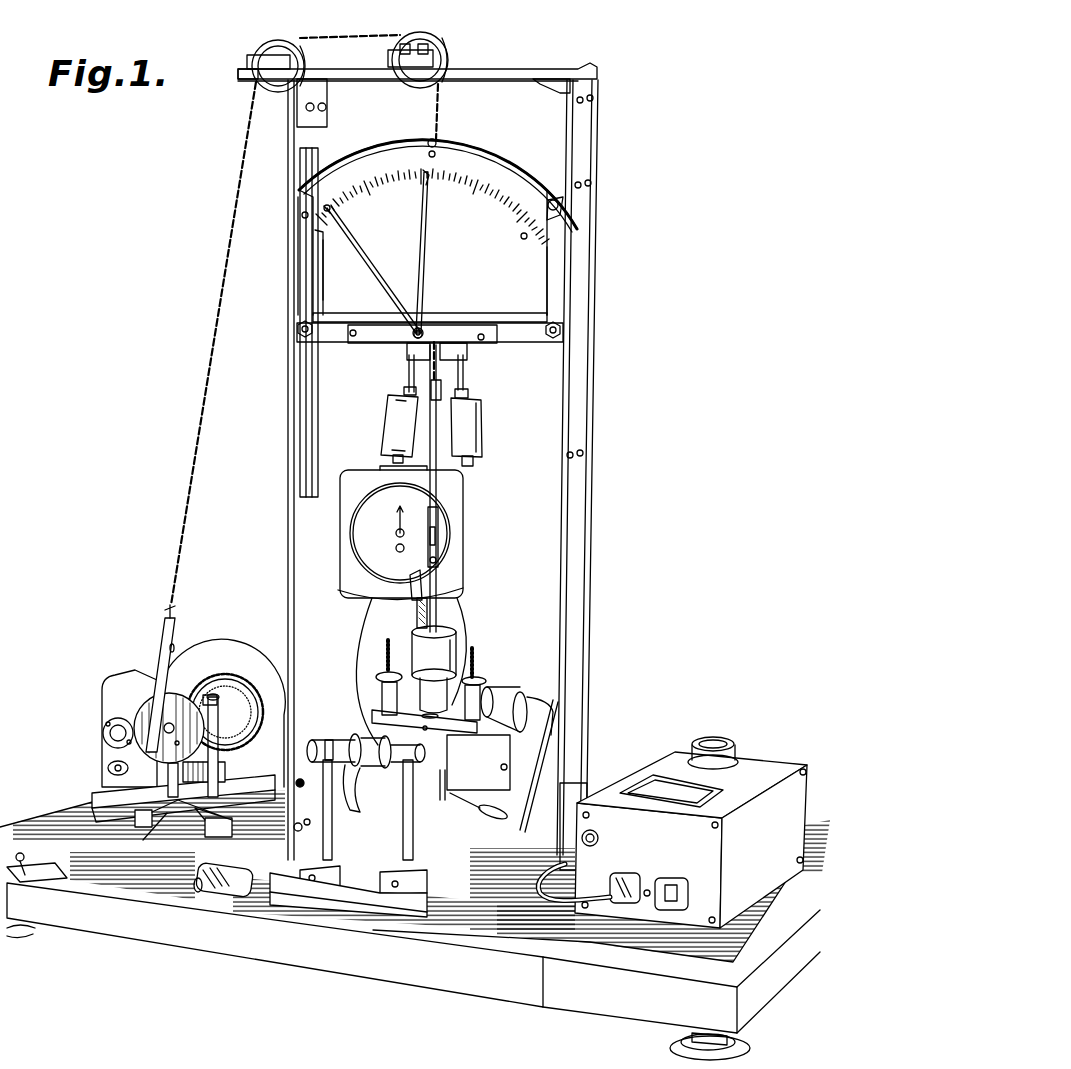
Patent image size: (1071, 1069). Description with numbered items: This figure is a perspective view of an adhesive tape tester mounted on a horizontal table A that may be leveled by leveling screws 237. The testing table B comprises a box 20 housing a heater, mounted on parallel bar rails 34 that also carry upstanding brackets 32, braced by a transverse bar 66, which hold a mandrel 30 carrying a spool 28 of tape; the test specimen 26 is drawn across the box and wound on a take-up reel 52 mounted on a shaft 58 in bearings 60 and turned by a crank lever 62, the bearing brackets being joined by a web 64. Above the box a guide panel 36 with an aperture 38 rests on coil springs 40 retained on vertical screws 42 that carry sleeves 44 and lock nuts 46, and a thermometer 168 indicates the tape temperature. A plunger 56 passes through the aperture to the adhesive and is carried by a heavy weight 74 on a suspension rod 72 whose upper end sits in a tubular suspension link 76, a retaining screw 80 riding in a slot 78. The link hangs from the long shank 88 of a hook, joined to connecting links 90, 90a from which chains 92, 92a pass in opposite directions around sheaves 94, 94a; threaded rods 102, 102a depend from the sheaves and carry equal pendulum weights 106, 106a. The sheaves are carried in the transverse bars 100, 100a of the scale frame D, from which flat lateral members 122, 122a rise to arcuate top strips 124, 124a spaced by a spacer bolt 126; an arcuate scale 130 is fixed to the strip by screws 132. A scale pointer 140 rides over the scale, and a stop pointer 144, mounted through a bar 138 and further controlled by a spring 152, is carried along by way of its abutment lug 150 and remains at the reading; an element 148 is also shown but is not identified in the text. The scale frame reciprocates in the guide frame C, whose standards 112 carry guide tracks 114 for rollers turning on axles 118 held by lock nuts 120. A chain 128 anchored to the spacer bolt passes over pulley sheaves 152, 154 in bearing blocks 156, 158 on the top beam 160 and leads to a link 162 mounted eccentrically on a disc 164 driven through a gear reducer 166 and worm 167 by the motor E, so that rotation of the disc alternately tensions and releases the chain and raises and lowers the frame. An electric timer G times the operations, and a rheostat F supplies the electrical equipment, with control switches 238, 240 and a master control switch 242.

The box 20 is at (492, 900).
The table A is at (165, 940).
The leveling screws 237 is at (672, 1045).
The vertical side beams or standards 112 is at (298, 508).
The guide tracks 114 is at (300, 465).
The guide frame C is at (592, 546).
The top transverse horizontal beam 160 is at (560, 58).
The pulley sheave 154 is at (255, 46).
The bearing block 158 is at (240, 72).
The pulley sheave 152 is at (440, 42).
The bearing block 156 is at (440, 62).
The flexible suspension chain or cable 128 is at (350, 33).
The arcuate scale 130 is at (402, 165).
The arcuate top frame strip 124 is at (490, 153).
The arcuate top frame strip 124a is at (555, 163).
The spacer bolt 126 is at (438, 143).
The screws 132 is at (320, 214).
The stop pointer 144 is at (428, 238).
The abutment lug 150 is at (432, 195).
The scale pointer 140 is at (375, 265).
The cross bar 148 is at (395, 318).
The scale frame D is at (536, 266).
The vertical lateral member 122a is at (310, 252).
The vertical lateral member 122 is at (300, 286).
The bar 138 is at (440, 325).
The front transverse frame bar 100 is at (553, 310).
The rear transverse frame bar 100a is at (550, 300).
The axles 118 is at (575, 328).
The lock nuts 120 is at (560, 335).
The sheave 94 is at (498, 348).
The sheave 94a is at (410, 350).
The chain or cable 92a is at (408, 374).
The chain or cable 92 is at (465, 375).
The connecting link 90a is at (402, 392).
The connecting link 90 is at (470, 394).
The threaded rod 102a is at (385, 412).
The threaded rod 102 is at (484, 412).
The pendulum weight 106a is at (383, 438).
The pendulum weight 106 is at (476, 452).
The long shank 88 is at (440, 438).
The electric timer G is at (473, 509).
The slot 78 is at (440, 516).
The tubular connecting suspension link 76 is at (440, 536).
The retaining screw 80 is at (440, 558).
The suspension rod or stem 72 is at (425, 580).
The thermometer 168 is at (410, 610).
The plunger 56 is at (450, 640).
The heavy weight 74 is at (445, 608).
The lock nuts 46 is at (384, 668).
The parallel vertical screws 42 is at (378, 650).
The guide panel 36 is at (472, 660).
The sleeves 44 is at (380, 700).
The coil springs 40 is at (385, 716).
The upstanding brackets 32 is at (540, 790).
The testing table B is at (568, 778).
The transversely extending bar 66 is at (560, 745).
The test specimen 26 is at (515, 692).
The spool or roll 28 is at (530, 690).
The supporting mandrel 30 is at (528, 712).
The shaft 58 is at (345, 742).
The spool or reel 52 is at (360, 738).
The bearings 60 is at (310, 750).
The aperture 38 is at (366, 788).
The manual crank lever 62 is at (355, 870).
The parallel bar rails 34 is at (440, 900).
The unitary web 64 is at (360, 885).
The motor E is at (218, 651).
The rotating disc 164 is at (160, 705).
The gear reducer 166 is at (240, 675).
The vertically reciprocable link 162 is at (160, 672).
The worm 167 is at (141, 838).
The master control switch 242 is at (45, 864).
The control switch 240 is at (240, 895).
The rheostat F is at (672, 832).
The control switch 238 is at (690, 867).